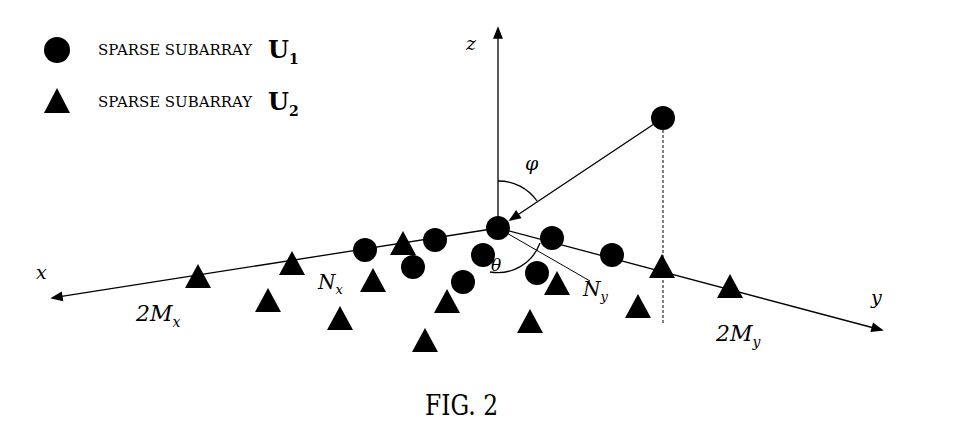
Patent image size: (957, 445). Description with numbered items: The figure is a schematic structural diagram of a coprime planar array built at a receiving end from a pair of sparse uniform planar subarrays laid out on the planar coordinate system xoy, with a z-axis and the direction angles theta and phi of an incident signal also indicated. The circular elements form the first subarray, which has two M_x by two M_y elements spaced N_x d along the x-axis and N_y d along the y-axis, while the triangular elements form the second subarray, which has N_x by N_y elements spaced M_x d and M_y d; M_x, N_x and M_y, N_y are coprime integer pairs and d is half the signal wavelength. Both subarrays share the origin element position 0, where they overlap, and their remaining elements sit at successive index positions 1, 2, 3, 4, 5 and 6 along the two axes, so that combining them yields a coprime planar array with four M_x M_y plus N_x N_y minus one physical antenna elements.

The origin array element position 0 is at (500, 213).
The first array element index position 1 is at (493, 225).
The sparse subarray element index 2 is at (487, 239).
The sparse subarray element index 3 is at (477, 250).
The sparse subarray element index 4 is at (464, 266).
The sparse subarray element position 5 is at (457, 264).
The sparse subarray element position 6 is at (452, 276).